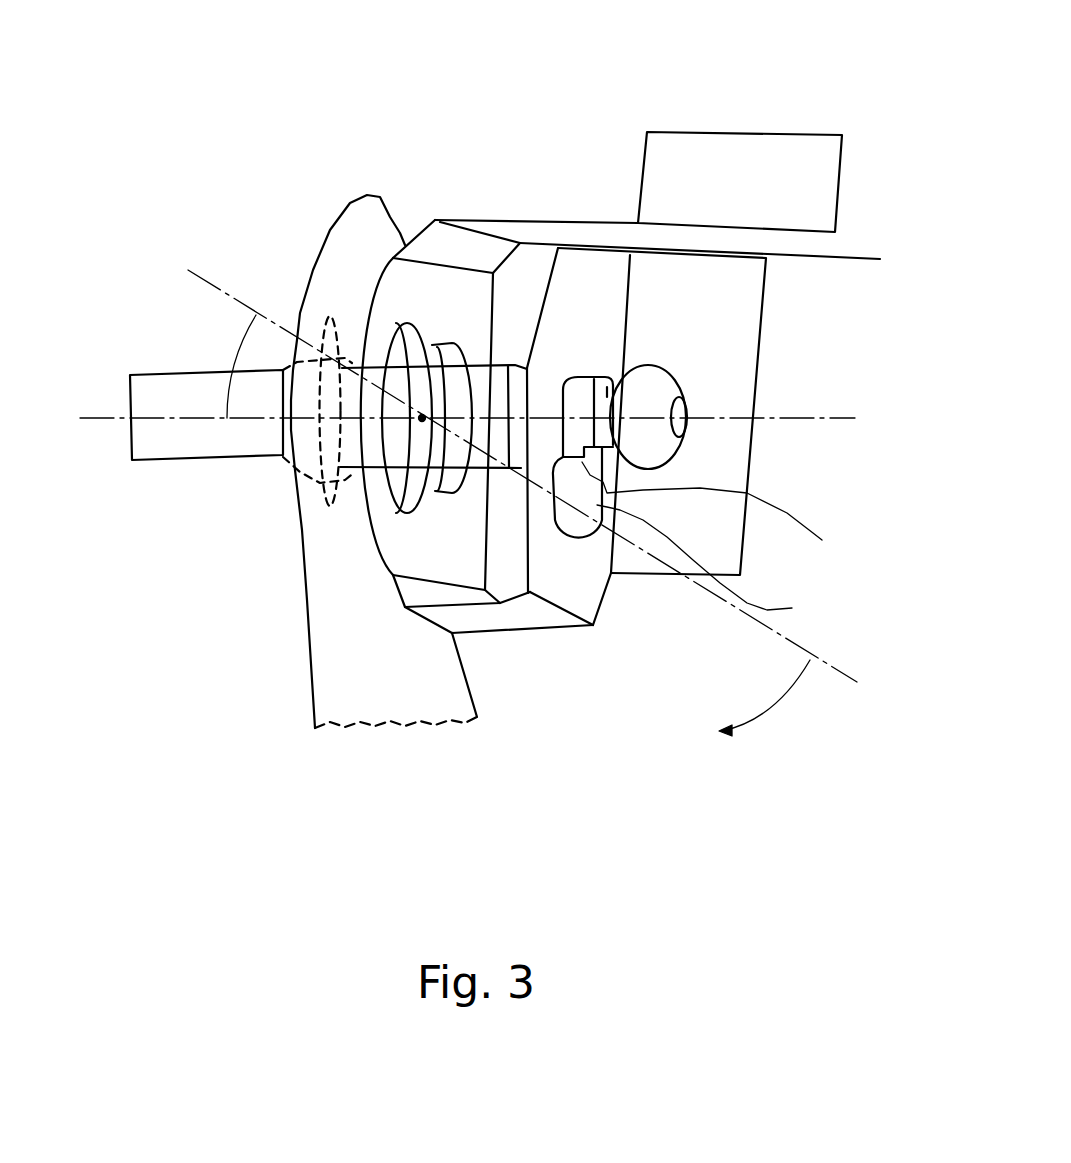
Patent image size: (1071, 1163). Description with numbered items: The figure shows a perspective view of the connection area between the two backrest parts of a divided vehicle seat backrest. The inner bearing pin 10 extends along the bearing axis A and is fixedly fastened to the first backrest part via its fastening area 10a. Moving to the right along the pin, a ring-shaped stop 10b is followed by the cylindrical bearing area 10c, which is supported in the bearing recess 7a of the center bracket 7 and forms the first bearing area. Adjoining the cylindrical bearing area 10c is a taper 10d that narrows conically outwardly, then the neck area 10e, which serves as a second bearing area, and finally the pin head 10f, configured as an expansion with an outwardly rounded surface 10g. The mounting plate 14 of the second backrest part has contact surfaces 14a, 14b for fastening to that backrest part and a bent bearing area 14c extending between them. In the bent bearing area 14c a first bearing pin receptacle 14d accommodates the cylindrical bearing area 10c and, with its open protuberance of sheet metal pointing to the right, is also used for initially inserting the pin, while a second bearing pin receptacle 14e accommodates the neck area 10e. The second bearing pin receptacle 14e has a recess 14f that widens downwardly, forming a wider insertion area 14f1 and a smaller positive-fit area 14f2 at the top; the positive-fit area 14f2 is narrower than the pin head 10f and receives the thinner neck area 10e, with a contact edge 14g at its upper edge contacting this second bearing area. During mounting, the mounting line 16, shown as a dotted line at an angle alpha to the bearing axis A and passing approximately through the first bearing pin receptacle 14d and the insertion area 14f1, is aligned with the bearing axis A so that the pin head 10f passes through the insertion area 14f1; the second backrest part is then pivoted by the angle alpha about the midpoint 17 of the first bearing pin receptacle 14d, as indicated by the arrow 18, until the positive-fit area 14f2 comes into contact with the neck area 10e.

The center bracket 7 is at (359, 461).
The bearing recess 7a is at (329, 315).
The inner bearing pin 10 is at (480, 360).
The fastening area 10a is at (157, 387).
The ring-shaped stop 10b is at (355, 358).
The cylindrical bearing area 10c is at (383, 465).
The taper 10d is at (508, 366).
The neck area 10e is at (602, 398).
The pin head 10f is at (677, 385).
The rounded surface 10g is at (677, 455).
The mounting plate 14 is at (620, 353).
The contact surface 14a is at (740, 144).
The contact surface 14b is at (733, 538).
The bent bearing area 14c is at (495, 220).
The first bearing pin receptacle 14d is at (462, 340).
The second bearing pin receptacle 14e is at (593, 380).
The recess 14f is at (576, 548).
The insertion area 14f1 is at (728, 565).
The positive-fit area 14f2 is at (724, 514).
The contact edge 14g is at (563, 427).
The mounting line 16 is at (200, 277).
The midpoint 17 is at (420, 418).
The arrow 18 is at (810, 660).
The bearing axis A is at (103, 418).